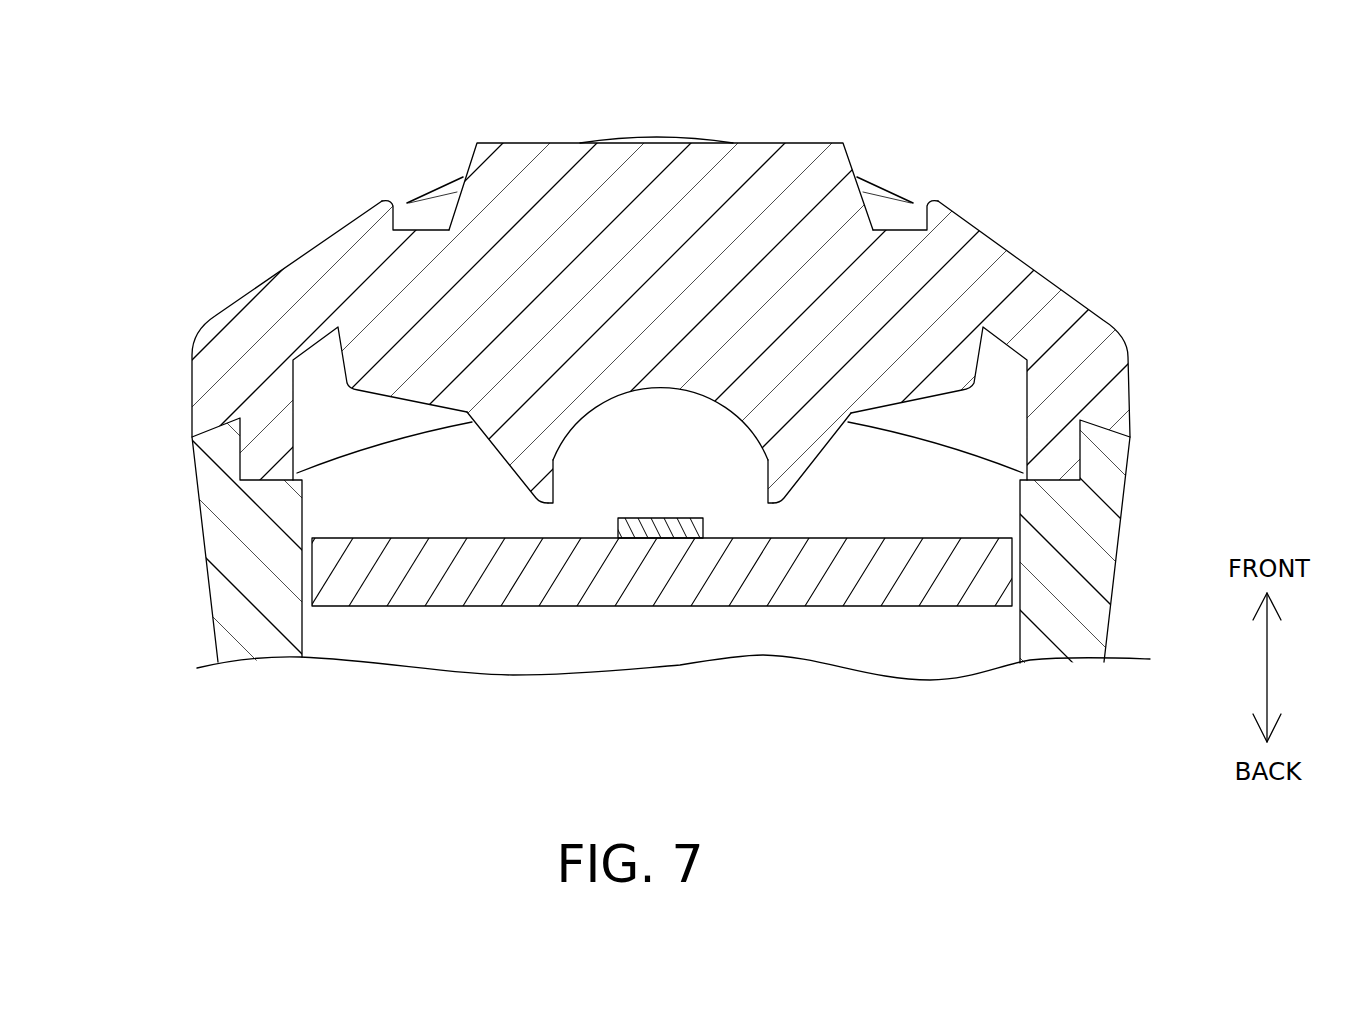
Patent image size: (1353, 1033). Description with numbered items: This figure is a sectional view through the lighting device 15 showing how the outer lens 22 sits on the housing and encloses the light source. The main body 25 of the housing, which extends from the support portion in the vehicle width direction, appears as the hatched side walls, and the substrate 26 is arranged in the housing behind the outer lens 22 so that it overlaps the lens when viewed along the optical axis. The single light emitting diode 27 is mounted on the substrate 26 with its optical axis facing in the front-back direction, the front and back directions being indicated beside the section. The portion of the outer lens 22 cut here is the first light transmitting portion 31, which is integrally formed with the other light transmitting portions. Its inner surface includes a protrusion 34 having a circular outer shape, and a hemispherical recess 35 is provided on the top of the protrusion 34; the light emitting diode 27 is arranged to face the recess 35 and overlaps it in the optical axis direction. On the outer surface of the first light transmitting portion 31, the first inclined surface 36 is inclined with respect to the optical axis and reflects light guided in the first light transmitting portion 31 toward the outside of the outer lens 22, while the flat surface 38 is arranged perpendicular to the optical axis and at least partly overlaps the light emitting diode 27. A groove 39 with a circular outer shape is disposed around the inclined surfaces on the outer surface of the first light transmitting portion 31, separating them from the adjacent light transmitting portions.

The lighting device 15 is at (1140, 164).
The outer lens 22 is at (990, 184).
The main body 25 is at (236, 562).
The substrate 26 is at (543, 570).
The light emitting diode 27 is at (665, 530).
The first light transmitting portion 31 is at (747, 128).
The protrusion 34 is at (808, 477).
The recess 35 is at (750, 437).
The first inclined surface 36 is at (869, 182).
The flat surface 38 is at (628, 142).
The groove 39 is at (417, 230).